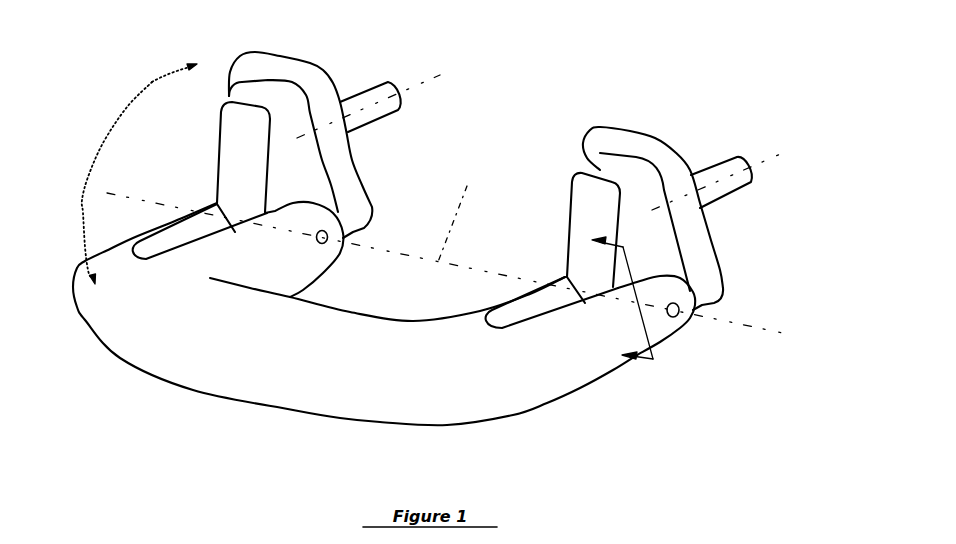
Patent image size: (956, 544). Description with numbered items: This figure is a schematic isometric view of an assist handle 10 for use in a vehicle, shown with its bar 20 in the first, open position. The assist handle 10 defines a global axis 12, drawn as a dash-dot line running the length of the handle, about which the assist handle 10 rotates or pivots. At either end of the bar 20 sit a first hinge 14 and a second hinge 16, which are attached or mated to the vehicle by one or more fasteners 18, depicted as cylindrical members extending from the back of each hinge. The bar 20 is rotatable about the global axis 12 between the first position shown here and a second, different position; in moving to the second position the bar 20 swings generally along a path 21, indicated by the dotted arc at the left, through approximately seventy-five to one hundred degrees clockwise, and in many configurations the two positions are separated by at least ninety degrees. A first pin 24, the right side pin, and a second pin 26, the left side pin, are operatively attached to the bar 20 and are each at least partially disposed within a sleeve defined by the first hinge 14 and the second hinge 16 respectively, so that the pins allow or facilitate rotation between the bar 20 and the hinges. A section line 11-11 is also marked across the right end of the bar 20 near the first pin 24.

The assist handle 10 is at (429, 258).
The section line 11-11 is at (652, 362).
The global axis 12 is at (458, 212).
The first hinge 14 is at (615, 166).
The second hinge 16 is at (233, 147).
The fasteners 18 is at (372, 97).
The bar 20 is at (227, 372).
The path 21 is at (152, 82).
The first pin 24 is at (680, 313).
The second pin 26 is at (328, 238).